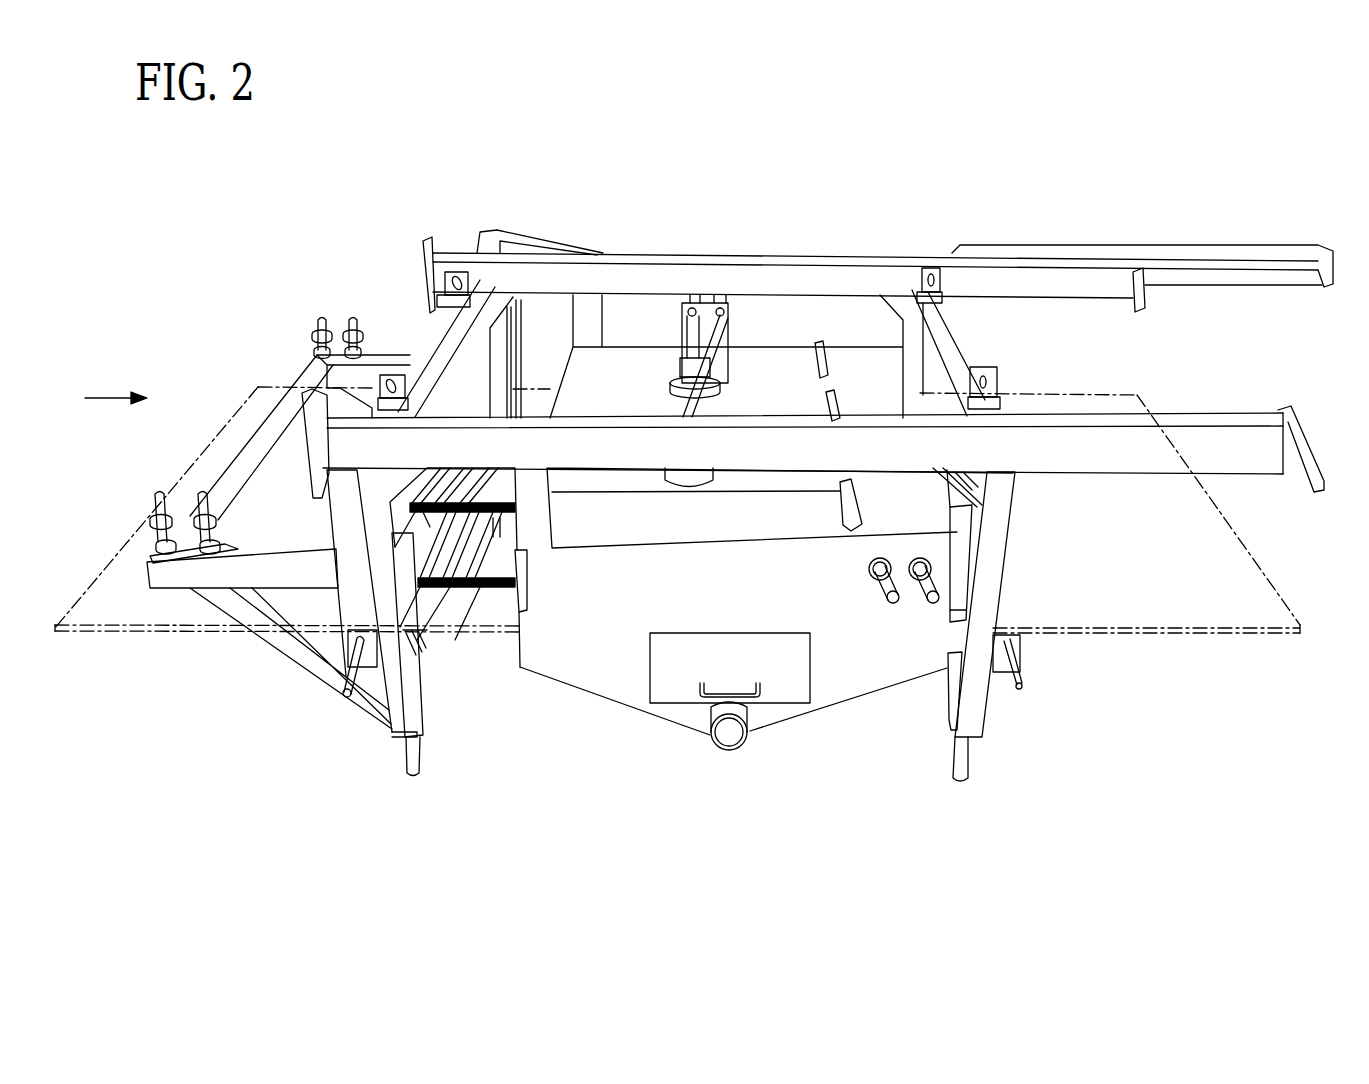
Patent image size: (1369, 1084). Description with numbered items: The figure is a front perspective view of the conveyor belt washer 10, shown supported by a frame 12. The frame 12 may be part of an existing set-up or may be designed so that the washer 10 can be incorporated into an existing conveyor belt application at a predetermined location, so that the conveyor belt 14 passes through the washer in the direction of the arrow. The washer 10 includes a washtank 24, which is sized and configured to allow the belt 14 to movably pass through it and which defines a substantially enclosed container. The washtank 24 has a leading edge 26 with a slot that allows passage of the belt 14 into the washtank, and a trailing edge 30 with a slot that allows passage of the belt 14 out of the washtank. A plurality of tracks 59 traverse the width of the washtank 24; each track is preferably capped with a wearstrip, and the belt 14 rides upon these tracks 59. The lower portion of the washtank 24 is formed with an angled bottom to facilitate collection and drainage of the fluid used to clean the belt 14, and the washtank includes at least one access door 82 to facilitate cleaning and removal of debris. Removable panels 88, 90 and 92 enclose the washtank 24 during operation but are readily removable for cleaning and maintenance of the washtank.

The conveyor belt washer 10 is at (583, 858).
The frame 12 is at (658, 230).
The conveyor belt 14 is at (237, 395).
The washtank 24 is at (875, 703).
The leading edge 26 is at (518, 562).
The trailing edge 30 is at (955, 598).
The tracks 59 is at (465, 587).
The access door 82 is at (778, 682).
The removable panel 88 is at (772, 367).
The removable panel 90 is at (797, 407).
The removable panel 92 is at (773, 522).